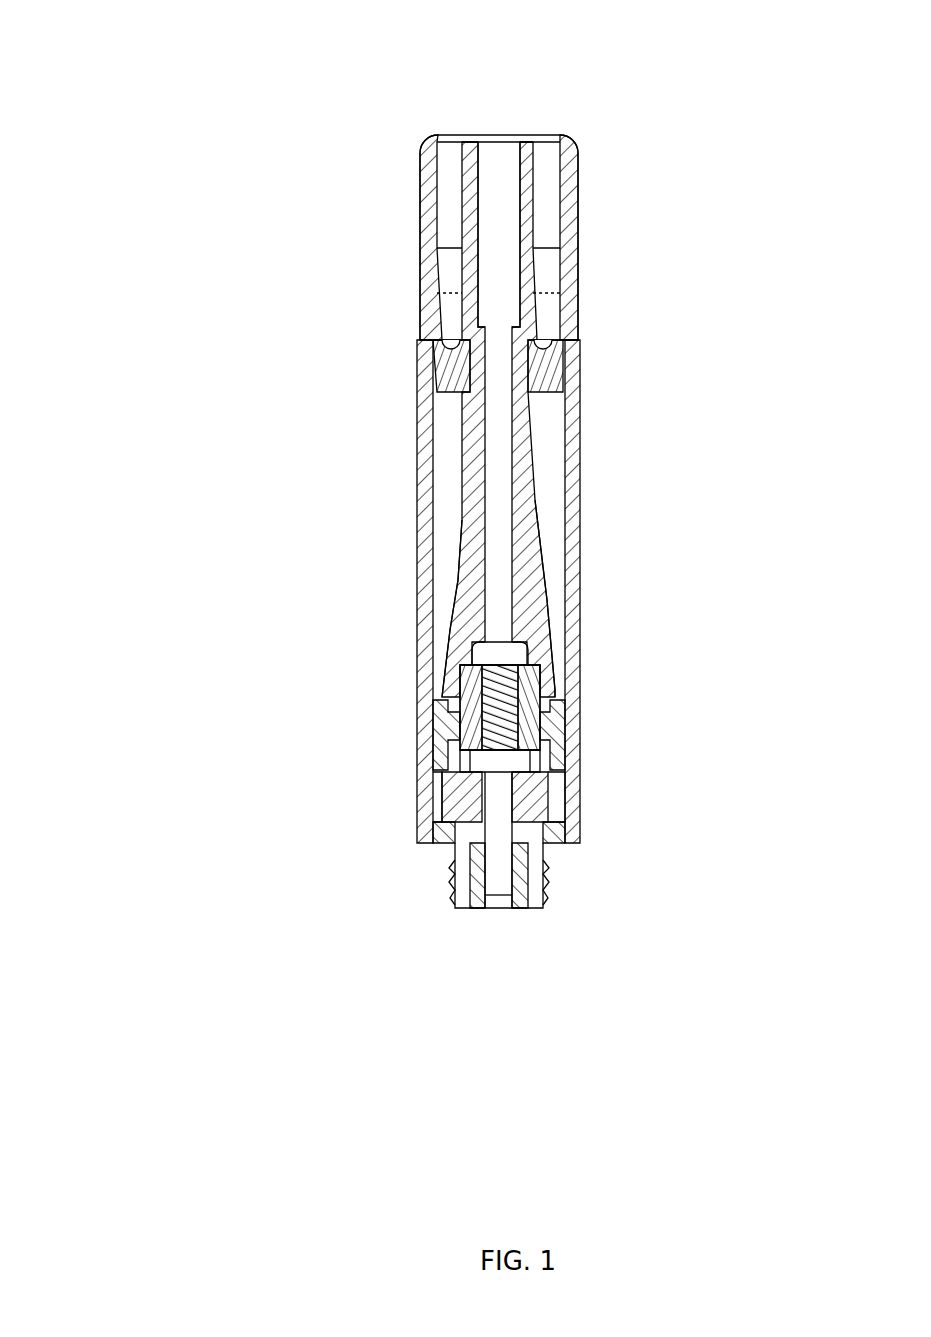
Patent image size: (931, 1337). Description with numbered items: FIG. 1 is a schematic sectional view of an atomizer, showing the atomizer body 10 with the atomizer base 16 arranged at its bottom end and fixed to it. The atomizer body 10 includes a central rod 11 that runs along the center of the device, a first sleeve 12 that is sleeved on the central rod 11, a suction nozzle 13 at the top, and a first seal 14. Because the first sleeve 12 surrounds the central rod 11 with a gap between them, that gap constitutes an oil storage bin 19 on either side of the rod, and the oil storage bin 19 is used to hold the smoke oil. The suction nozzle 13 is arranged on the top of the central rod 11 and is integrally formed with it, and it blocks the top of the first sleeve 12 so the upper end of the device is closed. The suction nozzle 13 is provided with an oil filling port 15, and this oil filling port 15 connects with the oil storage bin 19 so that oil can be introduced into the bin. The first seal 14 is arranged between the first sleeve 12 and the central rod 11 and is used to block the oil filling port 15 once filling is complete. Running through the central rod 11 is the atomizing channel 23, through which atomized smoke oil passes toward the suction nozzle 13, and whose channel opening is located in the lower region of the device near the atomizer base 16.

The atomizer body 10 is at (195, 296).
The central rod 11 is at (497, 297).
The first sleeve 12 is at (428, 555).
The suction nozzle 13 is at (424, 232).
The first seal 14 is at (438, 368).
The oil filling port 15 is at (537, 137).
The atomizer base 16 is at (438, 840).
The oil storage bin 19 is at (447, 572).
The atomizing channel 23 is at (496, 217).